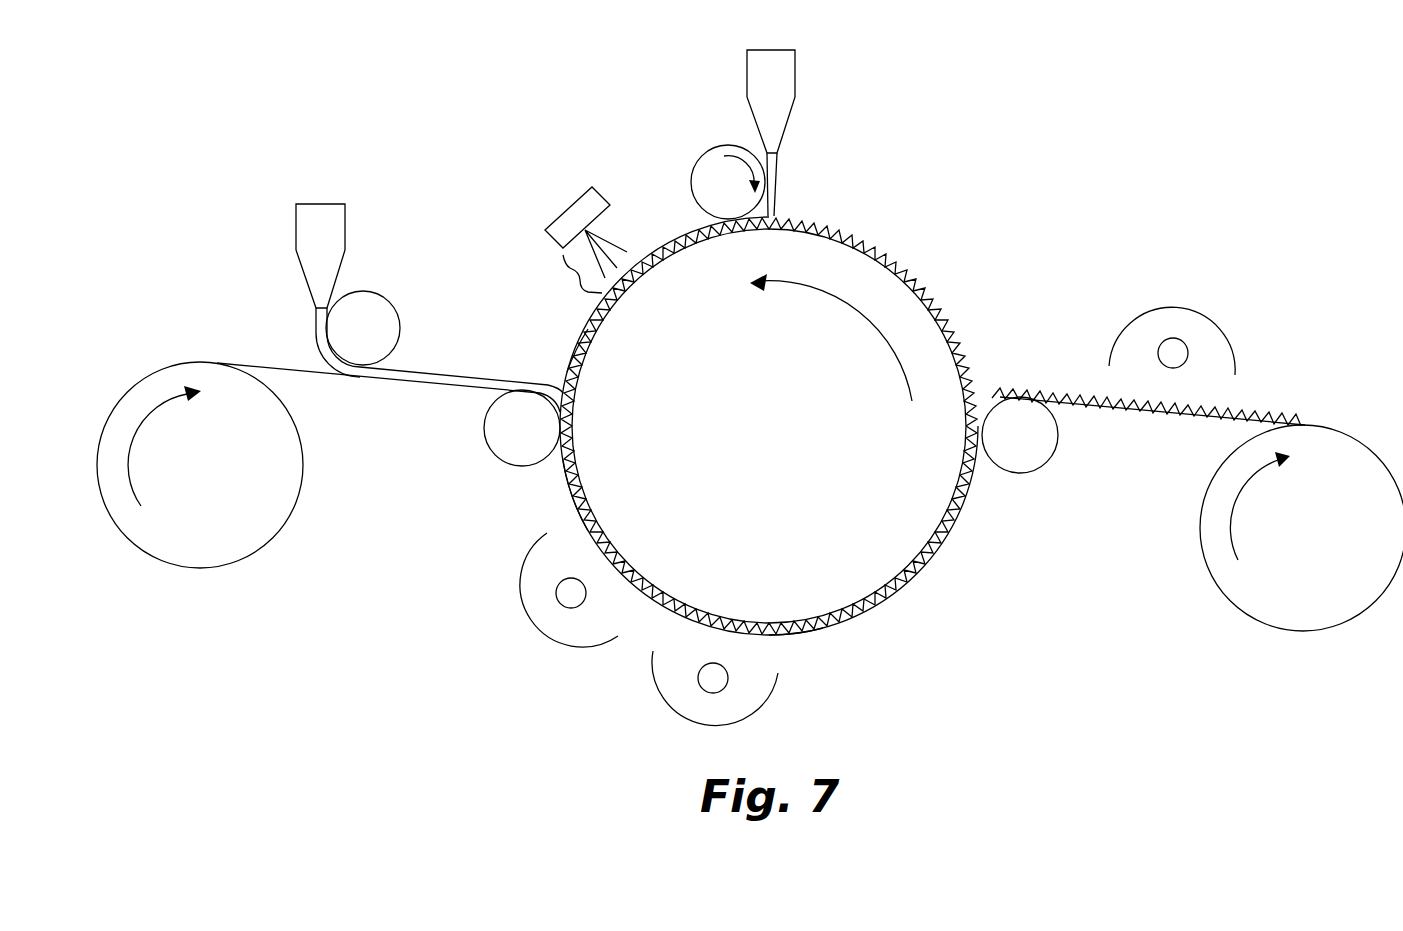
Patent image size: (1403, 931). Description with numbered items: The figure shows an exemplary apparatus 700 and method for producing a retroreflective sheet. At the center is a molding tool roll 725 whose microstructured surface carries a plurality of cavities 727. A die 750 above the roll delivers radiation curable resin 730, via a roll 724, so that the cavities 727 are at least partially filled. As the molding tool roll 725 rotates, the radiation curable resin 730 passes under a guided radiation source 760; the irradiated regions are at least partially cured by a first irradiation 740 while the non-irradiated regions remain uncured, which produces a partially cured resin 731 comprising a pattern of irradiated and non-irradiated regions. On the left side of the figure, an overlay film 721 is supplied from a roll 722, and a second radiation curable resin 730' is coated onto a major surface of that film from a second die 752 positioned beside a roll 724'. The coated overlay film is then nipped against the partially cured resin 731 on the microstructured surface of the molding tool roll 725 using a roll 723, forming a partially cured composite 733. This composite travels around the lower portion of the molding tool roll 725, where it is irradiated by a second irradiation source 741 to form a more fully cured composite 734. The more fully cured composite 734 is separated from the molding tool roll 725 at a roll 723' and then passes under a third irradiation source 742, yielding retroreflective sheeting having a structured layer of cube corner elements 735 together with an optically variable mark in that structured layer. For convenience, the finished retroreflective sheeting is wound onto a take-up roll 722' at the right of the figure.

The apparatus 700 is at (1095, 180).
The overlay film 721 is at (238, 362).
The roll 722 is at (219, 485).
The take-up roll 722' is at (1301, 554).
The roll 723 is at (499, 445).
The roll 723' is at (1044, 459).
The roll 724 is at (702, 168).
The roll 724' is at (382, 304).
The molding tool roll 725 is at (857, 573).
The cavities 727 is at (946, 303).
The radiation curable resin 730 is at (769, 394).
The radiation curable resin 730' is at (397, 346).
The partially cured resin 731 is at (568, 358).
The partially cured composite 733 is at (572, 490).
The more fully cured composite 734 is at (798, 632).
The structured layer of cube corner elements 735 is at (1275, 405).
The first irradiation 740 is at (564, 283).
The second irradiation source 741 is at (658, 690).
The third irradiation source 742 is at (1205, 320).
The die 750 is at (782, 107).
The second hopper 752 is at (310, 262).
The guided radiation source 760 is at (570, 212).